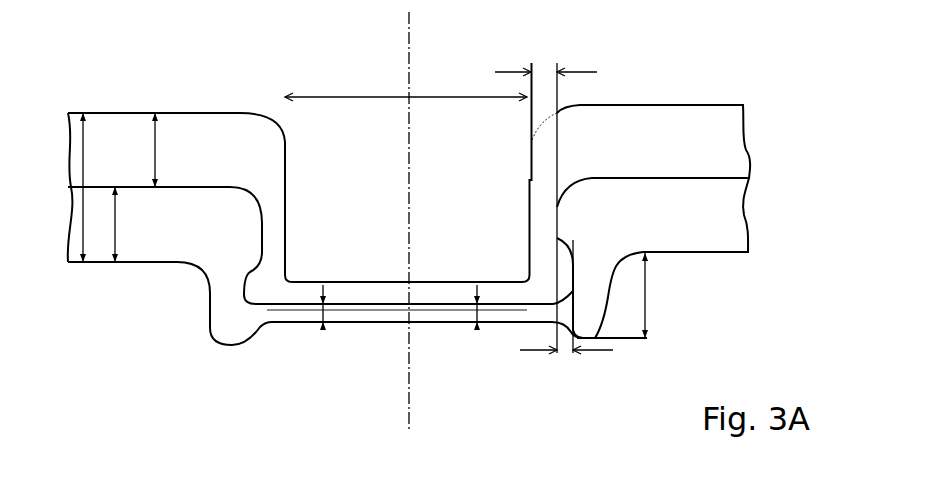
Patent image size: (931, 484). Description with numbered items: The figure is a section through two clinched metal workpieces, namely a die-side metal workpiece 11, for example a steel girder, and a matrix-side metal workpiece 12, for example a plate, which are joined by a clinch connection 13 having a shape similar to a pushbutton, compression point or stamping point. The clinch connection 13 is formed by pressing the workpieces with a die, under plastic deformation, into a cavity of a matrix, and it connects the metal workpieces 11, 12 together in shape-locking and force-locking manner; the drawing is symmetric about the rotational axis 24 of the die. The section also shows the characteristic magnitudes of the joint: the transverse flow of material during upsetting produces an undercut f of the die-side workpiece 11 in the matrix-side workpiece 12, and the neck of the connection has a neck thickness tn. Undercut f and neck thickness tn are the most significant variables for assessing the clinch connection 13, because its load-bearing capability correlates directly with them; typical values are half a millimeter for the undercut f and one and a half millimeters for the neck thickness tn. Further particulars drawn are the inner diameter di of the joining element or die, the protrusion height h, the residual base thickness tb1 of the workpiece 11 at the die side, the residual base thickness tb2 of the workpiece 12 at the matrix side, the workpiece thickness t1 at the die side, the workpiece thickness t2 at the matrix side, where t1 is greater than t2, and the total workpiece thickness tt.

The metal workpiece 11 is at (732, 140).
The metal workpiece 12 is at (733, 223).
The clinch connection 13 is at (352, 367).
The rotational axis 24 is at (409, 34).
The inner diameter di is at (406, 88).
The neck thickness tn is at (546, 63).
The undercut f is at (566, 361).
The protrusion height h is at (653, 295).
The total workpiece thickness tt is at (83, 170).
The metal workpiece thickness at the die side t1 is at (166, 150).
The metal workpiece thickness at the matrix side t2 is at (125, 224).
The residual base thickness of the metal workpiece at the die side tb1 is at (323, 327).
The residual base thickness of the metal workpiece at the matrix side tb2 is at (477, 327).